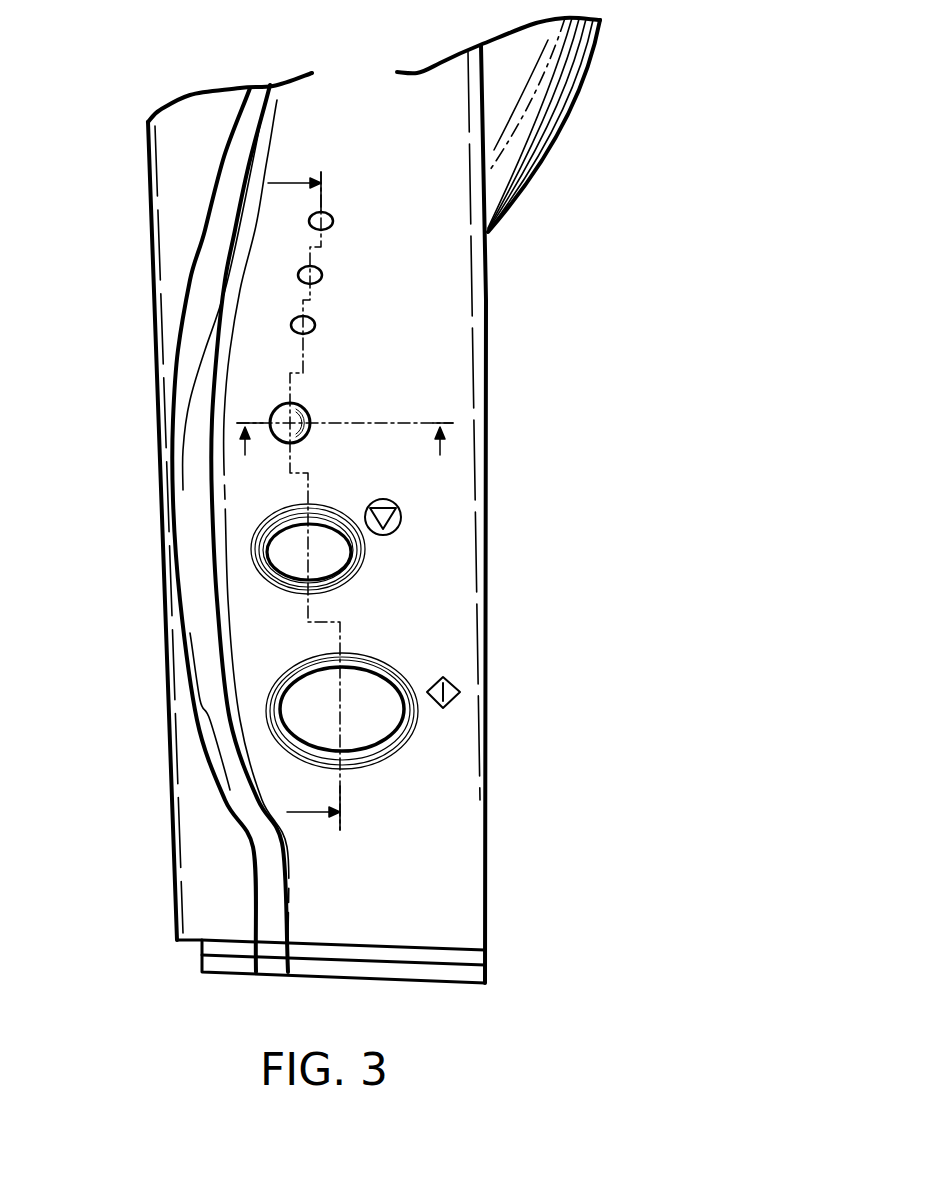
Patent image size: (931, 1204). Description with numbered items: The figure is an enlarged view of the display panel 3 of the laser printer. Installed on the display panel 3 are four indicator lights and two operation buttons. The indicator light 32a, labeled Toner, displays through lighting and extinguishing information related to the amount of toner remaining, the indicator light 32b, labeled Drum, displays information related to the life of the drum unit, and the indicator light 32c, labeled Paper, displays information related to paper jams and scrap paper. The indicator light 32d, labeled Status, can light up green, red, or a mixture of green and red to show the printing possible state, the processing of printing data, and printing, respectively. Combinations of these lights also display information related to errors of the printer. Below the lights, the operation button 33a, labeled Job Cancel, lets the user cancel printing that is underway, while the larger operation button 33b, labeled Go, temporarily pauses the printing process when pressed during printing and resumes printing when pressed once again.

The display panel 3 is at (70, 202).
The indicator light 32a is at (310, 220).
The indicator light 32b is at (298, 275).
The indicator light 32c is at (291, 325).
The indicator light 32d is at (282, 443).
The operation button 33a is at (292, 577).
The operation button 33b is at (287, 716).